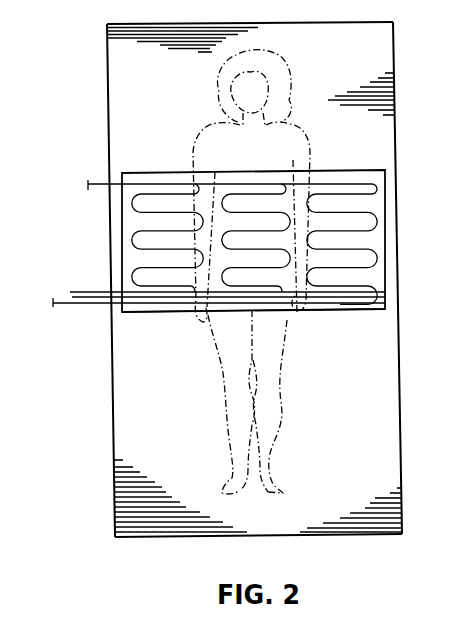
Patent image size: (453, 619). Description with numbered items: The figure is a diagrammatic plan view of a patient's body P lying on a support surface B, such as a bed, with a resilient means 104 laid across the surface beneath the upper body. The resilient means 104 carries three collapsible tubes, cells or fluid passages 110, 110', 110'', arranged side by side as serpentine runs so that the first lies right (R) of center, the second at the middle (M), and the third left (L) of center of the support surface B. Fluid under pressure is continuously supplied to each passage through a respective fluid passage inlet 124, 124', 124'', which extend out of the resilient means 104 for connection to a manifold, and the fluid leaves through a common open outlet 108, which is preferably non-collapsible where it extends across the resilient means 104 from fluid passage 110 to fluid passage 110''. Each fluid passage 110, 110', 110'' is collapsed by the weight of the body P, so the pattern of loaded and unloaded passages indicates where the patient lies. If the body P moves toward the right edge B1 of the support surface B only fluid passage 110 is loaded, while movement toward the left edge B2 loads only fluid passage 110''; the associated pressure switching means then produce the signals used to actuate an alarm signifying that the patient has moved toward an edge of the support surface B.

The resilient means 104 is at (156, 167).
The outlet 108 is at (95, 182).
The fluid passage 110 is at (134, 238).
The fluid passage 110' is at (256, 213).
The fluid passage 110'' is at (342, 219).
The fluid passage inlet 124 is at (226, 274).
The fluid passage inlet 124' is at (194, 265).
The fluid passage inlet 124'' is at (219, 318).
The right of center R is at (178, 318).
The middle M is at (268, 320).
The left of center L is at (336, 319).
The body P is at (210, 358).
The support surface B is at (127, 428).
The right edge B1 is at (110, 353).
The left edge B2 is at (400, 395).